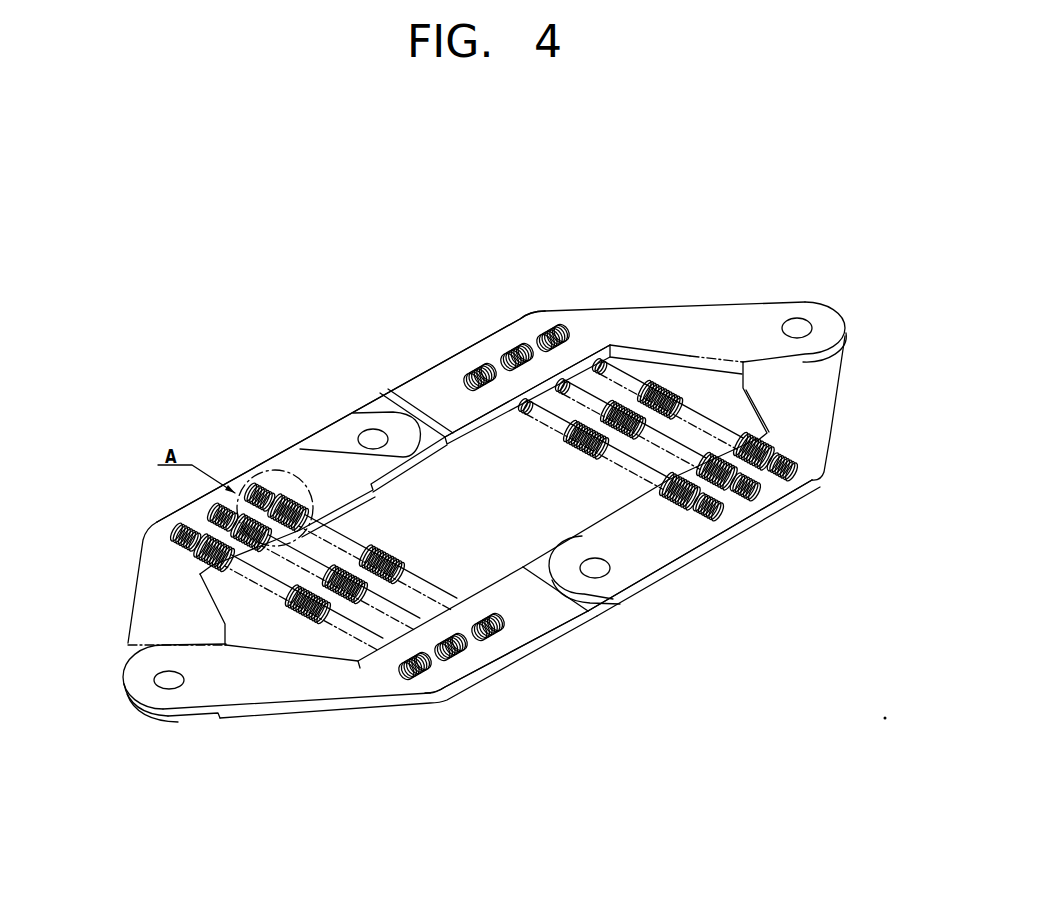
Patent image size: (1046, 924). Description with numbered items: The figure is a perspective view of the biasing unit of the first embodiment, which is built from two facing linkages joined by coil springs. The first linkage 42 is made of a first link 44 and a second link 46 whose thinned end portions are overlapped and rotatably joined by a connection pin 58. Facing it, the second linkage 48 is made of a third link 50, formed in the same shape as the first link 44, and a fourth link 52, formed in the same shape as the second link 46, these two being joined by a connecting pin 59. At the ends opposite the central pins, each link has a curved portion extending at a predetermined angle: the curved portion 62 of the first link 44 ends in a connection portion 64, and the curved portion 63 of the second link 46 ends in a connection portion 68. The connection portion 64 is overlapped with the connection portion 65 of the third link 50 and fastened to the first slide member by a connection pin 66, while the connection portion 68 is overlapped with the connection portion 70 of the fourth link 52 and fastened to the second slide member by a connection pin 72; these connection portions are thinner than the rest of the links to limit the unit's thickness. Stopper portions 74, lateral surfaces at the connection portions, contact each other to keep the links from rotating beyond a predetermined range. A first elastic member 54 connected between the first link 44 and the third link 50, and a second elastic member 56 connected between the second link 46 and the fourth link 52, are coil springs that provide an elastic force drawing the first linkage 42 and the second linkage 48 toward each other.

The first linkage 42 is at (360, 302).
The first link 44 is at (323, 443).
The second link 46 is at (425, 383).
The second linkage 48 is at (752, 614).
The third link 50 is at (550, 622).
The fourth link 52 is at (670, 553).
The first elastic member 54 is at (296, 603).
The second elastic member 56 is at (663, 388).
The connection pin 58 is at (373, 440).
The connecting pin 59 is at (580, 568).
The curved portion 62 is at (148, 599).
The curved portion 63 is at (747, 320).
The connection portion 64 is at (126, 662).
The connection portion 65 is at (142, 692).
The connection pin 66 is at (169, 686).
The connection portion 68 is at (820, 312).
The connection portion 70 is at (843, 356).
The connection pin 72 is at (792, 319).
The stopper portion 74 is at (128, 646).